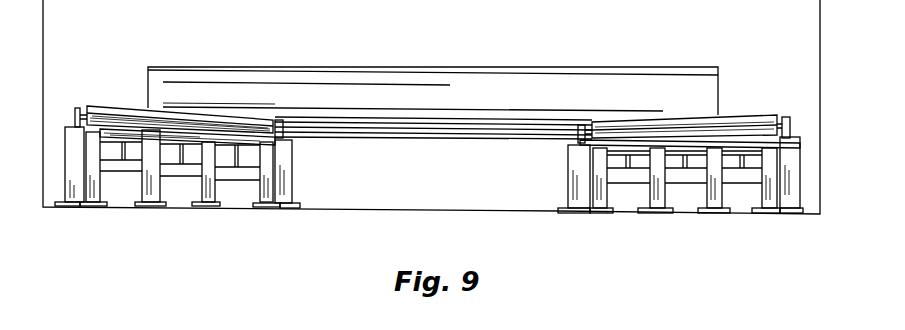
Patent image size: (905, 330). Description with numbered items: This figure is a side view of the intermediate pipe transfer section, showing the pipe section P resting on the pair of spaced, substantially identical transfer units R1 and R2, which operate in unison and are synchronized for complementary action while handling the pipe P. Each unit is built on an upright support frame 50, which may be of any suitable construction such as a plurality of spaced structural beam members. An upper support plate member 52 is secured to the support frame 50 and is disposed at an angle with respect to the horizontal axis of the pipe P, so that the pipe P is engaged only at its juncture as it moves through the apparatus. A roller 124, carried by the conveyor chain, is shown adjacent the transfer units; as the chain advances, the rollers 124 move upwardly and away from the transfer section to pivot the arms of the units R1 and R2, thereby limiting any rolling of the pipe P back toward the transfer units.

The coated pipe section P is at (605, 88).
The transfer unit R1 is at (155, 181).
The transfer unit R2 is at (703, 195).
The roller 124 is at (137, 113).
The upper support plate member 52 is at (116, 131).
The upright support frame 50 is at (71, 180).